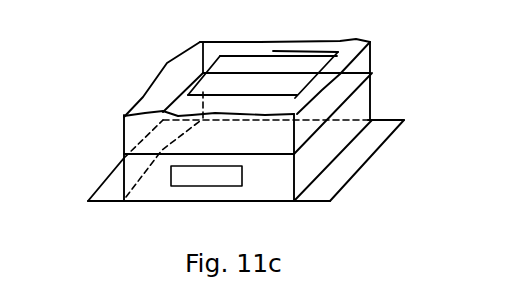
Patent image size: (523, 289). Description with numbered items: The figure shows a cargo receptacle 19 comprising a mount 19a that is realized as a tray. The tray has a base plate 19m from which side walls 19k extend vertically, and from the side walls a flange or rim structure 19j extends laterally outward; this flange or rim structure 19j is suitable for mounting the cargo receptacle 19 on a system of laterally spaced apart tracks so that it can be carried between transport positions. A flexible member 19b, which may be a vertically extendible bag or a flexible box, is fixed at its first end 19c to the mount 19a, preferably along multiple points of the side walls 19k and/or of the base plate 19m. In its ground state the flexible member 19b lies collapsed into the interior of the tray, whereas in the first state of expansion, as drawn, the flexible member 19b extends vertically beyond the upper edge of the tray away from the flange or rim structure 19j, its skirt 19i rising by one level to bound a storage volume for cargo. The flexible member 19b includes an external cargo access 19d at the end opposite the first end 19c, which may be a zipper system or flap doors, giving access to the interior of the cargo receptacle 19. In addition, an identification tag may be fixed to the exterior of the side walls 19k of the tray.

The cargo receptacle 19 is at (170, 53).
The external access 19d is at (272, 51).
The flexible member 19b is at (371, 51).
The first end 19c is at (349, 100).
The skirt 19i is at (124, 133).
The mount 19a is at (121, 154).
The base plate 19m is at (117, 192).
The side walls 19k is at (345, 145).
The flange or rim structure 19j is at (340, 188).